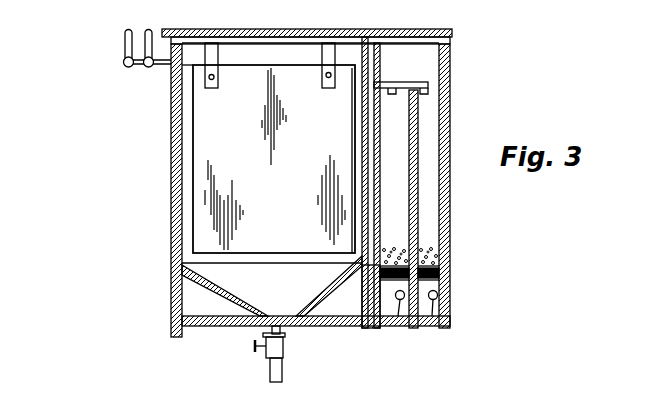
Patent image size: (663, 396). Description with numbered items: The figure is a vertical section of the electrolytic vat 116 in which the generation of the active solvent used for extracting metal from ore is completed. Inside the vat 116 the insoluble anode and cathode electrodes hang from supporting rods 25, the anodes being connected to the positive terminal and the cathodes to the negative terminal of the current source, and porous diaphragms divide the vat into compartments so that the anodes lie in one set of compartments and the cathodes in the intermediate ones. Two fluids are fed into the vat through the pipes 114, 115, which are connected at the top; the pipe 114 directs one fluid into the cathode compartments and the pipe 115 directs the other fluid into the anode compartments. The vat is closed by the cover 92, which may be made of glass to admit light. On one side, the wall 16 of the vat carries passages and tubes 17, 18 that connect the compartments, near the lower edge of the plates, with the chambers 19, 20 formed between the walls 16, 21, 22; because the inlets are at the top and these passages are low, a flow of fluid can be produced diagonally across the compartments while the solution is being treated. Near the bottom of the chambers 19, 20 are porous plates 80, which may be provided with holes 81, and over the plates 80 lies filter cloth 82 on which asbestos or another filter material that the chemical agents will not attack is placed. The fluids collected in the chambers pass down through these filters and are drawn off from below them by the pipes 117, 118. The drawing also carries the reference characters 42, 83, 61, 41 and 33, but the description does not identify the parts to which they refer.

The pipe 114 is at (124, 51).
The pipe 115 is at (151, 38).
The hanger hook 42 is at (210, 44).
The cover 92 is at (325, 37).
The rods 25 is at (452, 42).
The passage and tube 17 is at (385, 82).
The passage and tube 18 is at (409, 84).
The vat 116 is at (171, 163).
The chamber 19 is at (395, 203).
The chamber 20 is at (432, 203).
The wall 21 is at (453, 256).
The screen 83 is at (440, 266).
The wall 22 is at (452, 275).
The support plate 61 is at (452, 288).
The porous plates 80 is at (446, 286).
The filter cloth 82 is at (350, 266).
The holes 81 is at (367, 289).
The hopper 41 is at (272, 289).
The drain valve 33 is at (285, 345).
The wall 16 is at (359, 300).
The pipe 117 is at (398, 326).
The pipe 118 is at (432, 326).